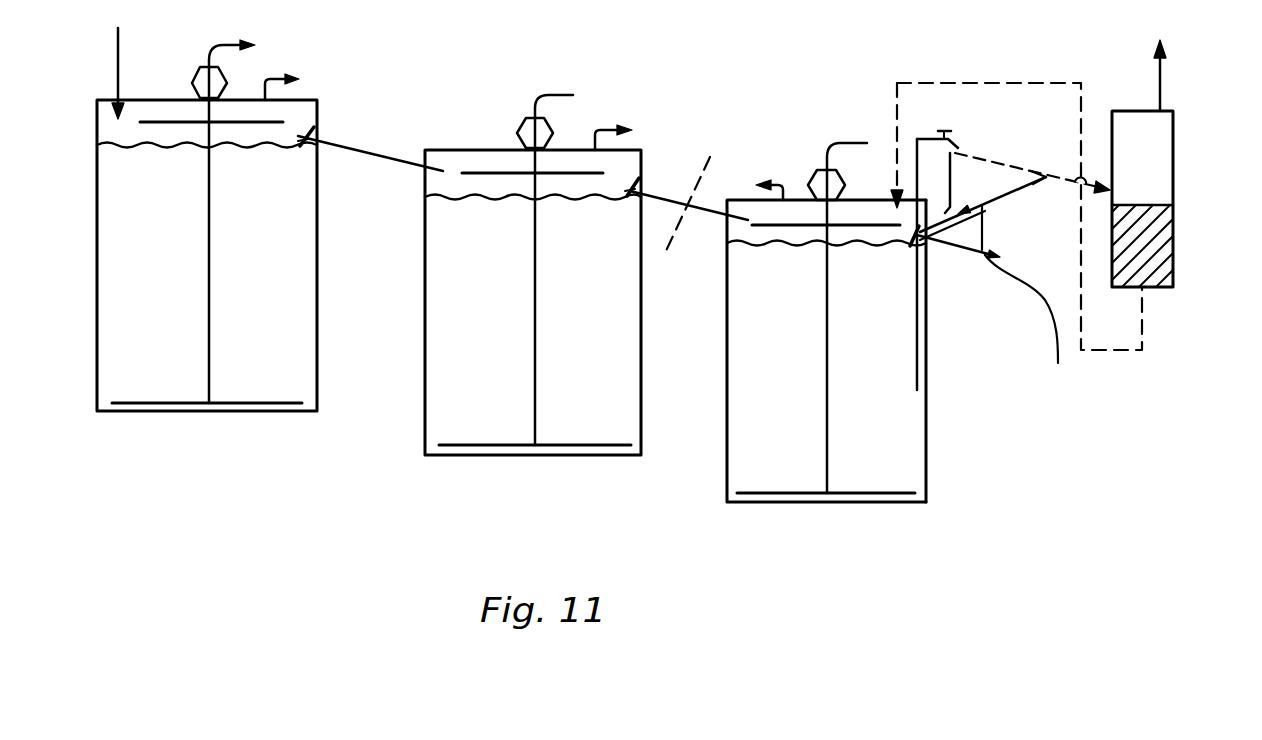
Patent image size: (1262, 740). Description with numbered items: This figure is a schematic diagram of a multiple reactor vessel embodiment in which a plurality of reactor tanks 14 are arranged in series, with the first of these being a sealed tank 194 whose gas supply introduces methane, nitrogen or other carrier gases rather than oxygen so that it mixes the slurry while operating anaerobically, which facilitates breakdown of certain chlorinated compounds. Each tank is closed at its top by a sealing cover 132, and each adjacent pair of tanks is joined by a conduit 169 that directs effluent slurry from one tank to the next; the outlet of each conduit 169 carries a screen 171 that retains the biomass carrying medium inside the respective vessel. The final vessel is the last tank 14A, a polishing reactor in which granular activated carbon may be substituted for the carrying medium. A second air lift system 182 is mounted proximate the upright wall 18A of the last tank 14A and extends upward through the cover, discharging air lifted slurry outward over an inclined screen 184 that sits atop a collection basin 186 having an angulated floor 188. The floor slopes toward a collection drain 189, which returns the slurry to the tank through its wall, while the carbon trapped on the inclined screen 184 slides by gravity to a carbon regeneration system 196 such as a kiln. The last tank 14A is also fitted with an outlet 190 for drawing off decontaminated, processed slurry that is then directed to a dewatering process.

The tank 14 is at (264, 411).
The last tank 14A is at (867, 503).
The upright wall 18A is at (927, 407).
The sealing cover 132 is at (800, 200).
The conduit 169 is at (393, 162).
The screen 171 is at (313, 131).
The second air lift system 182 is at (913, 362).
The inclined screen 184 is at (1008, 168).
The collection basin 186 is at (1023, 186).
The angulated floor 188 is at (942, 240).
The collection drain 189 is at (1000, 319).
The outlet 190 is at (915, 233).
The sealed tank 194 is at (175, 367).
The carbon regeneration system 196 is at (1173, 258).